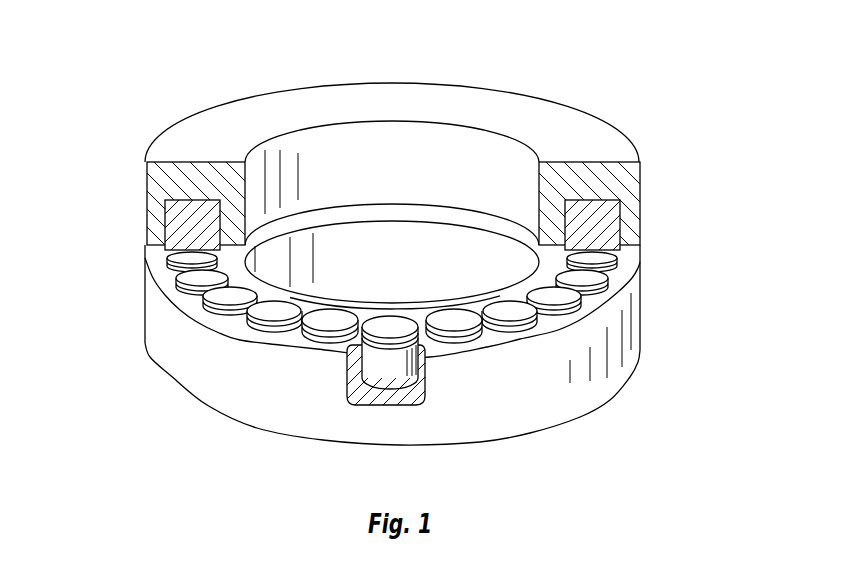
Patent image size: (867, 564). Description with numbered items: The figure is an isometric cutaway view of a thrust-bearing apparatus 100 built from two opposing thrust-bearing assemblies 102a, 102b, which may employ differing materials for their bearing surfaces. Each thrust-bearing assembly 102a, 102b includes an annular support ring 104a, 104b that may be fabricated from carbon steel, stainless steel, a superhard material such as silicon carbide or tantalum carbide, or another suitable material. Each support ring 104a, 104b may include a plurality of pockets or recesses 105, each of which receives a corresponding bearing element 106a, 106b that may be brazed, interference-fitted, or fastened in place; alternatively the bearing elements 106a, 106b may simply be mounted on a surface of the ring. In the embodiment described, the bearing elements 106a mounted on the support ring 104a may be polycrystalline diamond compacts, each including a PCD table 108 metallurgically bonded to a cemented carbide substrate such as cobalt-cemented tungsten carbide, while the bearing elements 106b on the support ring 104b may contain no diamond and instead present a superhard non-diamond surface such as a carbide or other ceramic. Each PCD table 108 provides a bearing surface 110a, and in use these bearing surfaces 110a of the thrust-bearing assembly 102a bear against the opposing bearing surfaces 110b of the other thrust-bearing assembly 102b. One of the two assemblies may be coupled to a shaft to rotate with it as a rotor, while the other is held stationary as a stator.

The thrust-bearing apparatus 100 is at (547, 50).
The thrust-bearing assembly 102a is at (460, 354).
The thrust-bearing assembly 102b is at (672, 238).
The annular support ring 104a is at (580, 392).
The annular support ring 104b is at (615, 178).
The pocket or recess 105 is at (347, 357).
The bearing element 106a is at (393, 367).
The bearing element 106b is at (618, 203).
The PCD table 108 is at (325, 331).
The bearing surface 110a is at (390, 327).
The bearing surface 110b is at (612, 265).